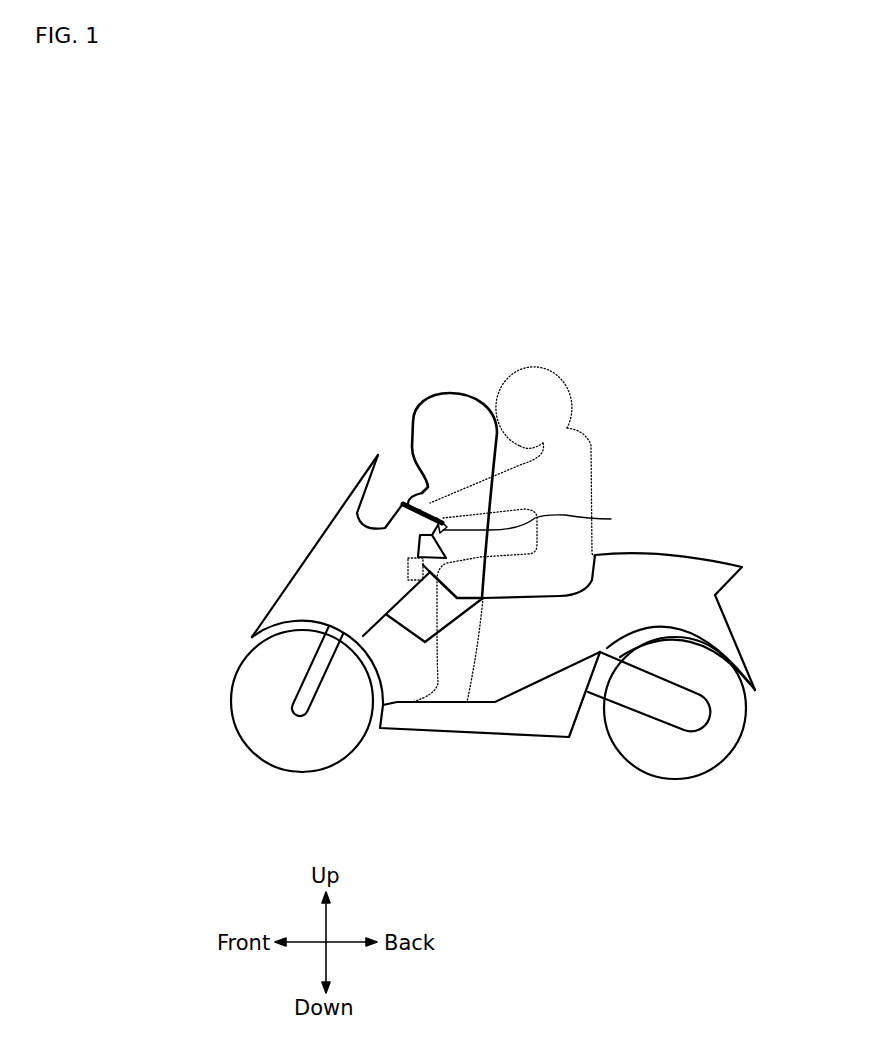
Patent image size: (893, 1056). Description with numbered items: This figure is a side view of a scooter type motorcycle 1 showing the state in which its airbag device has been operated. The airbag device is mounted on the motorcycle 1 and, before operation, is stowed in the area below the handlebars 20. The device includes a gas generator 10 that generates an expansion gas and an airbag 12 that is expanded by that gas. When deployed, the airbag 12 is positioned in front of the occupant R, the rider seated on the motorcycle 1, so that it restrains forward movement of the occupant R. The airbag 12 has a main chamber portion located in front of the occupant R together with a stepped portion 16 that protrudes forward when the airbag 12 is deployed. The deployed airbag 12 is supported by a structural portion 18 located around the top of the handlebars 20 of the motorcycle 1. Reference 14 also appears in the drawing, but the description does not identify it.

The motorcycle 1 is at (698, 551).
The gas generator 10 is at (410, 565).
The airbag 12 is at (434, 456).
The airbag main body 14 is at (478, 427).
The stepped portion 16 is at (420, 499).
The structural portion 18 is at (407, 498).
The handlebars 20 is at (539, 519).
The occupant R is at (563, 365).